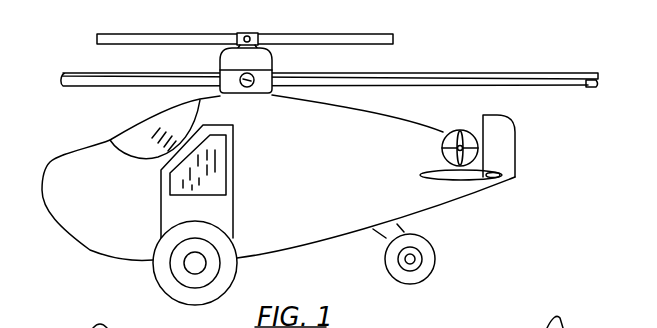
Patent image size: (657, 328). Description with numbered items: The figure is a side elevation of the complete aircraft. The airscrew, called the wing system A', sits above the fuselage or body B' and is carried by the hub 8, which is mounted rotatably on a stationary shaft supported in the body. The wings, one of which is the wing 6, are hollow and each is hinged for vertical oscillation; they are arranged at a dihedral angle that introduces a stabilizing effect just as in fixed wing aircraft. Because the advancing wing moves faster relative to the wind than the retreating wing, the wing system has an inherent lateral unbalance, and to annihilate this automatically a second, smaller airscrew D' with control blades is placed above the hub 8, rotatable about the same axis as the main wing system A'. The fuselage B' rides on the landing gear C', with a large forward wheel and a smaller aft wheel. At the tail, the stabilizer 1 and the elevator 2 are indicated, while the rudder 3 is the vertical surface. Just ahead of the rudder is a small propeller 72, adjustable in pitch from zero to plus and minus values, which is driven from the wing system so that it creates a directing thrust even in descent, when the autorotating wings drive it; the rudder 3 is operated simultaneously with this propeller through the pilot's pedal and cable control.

The fuselage B' is at (278, 178).
The control airscrew D' is at (245, 50).
The wing system A' is at (329, 64).
The wing 6 is at (597, 84).
The hub 8 is at (272, 57).
The rudder 3 is at (505, 147).
The propeller 72 is at (462, 128).
The stabilizer 1 is at (465, 180).
The elevator 2 is at (490, 177).
The landing gear C' is at (193, 267).